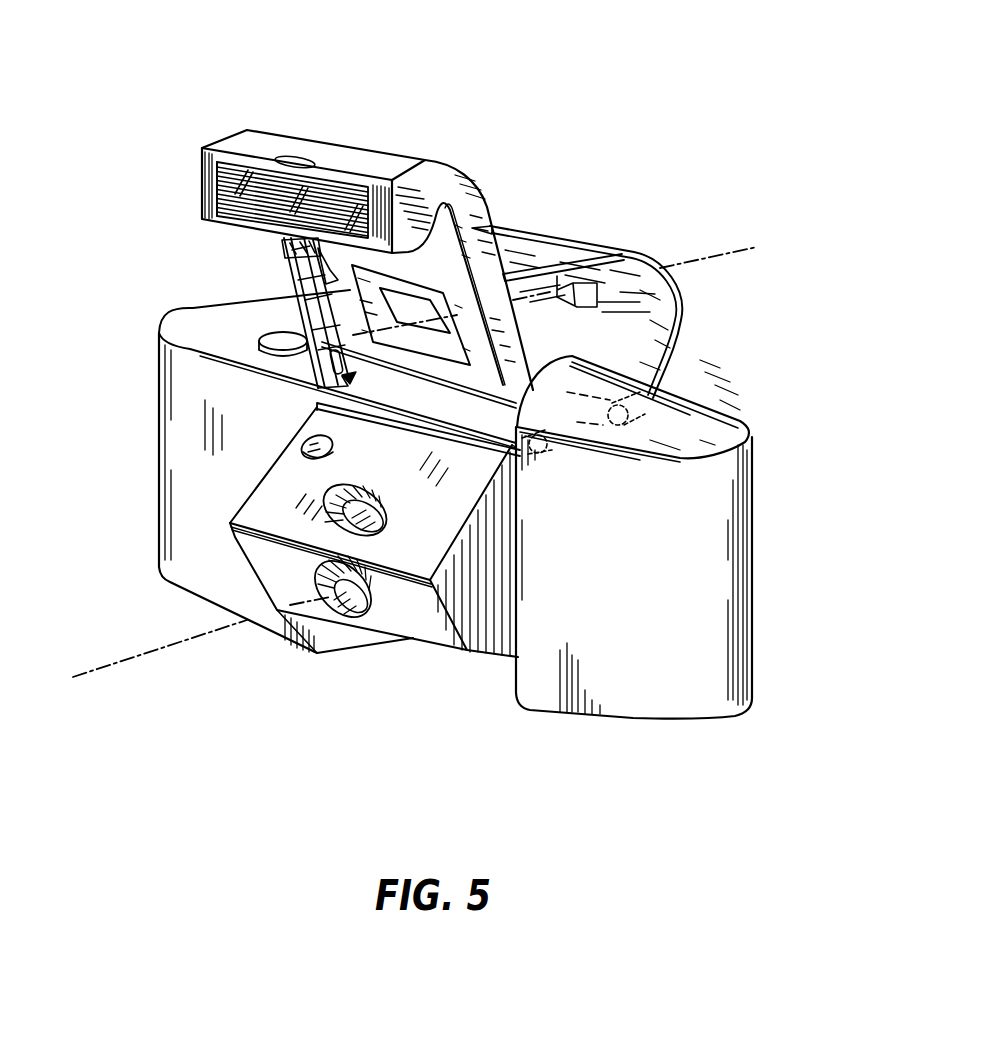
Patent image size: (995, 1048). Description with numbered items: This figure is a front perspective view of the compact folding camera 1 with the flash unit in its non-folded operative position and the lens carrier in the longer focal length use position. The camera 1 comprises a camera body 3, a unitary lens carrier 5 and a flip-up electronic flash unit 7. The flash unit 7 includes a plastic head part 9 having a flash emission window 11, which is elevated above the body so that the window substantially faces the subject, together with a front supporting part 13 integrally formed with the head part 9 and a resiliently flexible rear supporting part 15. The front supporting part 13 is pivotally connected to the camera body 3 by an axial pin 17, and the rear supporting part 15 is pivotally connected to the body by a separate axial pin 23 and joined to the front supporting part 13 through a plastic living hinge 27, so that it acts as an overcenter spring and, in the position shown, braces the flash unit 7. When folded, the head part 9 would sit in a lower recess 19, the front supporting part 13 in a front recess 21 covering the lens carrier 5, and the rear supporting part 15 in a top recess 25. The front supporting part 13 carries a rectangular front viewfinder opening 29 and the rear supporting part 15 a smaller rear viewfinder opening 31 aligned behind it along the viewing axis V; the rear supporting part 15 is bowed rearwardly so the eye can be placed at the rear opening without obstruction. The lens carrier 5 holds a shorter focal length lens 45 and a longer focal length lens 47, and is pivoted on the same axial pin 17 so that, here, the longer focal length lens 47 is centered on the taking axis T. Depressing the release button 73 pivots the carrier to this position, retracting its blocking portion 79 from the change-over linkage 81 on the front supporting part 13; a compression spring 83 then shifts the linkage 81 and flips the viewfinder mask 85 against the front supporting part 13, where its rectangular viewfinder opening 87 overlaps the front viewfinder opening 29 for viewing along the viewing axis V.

The compact folding 35mm camera 1 is at (757, 717).
The camera body 3 is at (757, 647).
The lens carrier 5 is at (413, 637).
The flip-up electronic flash unit 7 is at (390, 143).
The head part 9 is at (333, 160).
The flash emission window 11 is at (203, 198).
The front supporting part 13 is at (445, 243).
The rear supporting part 15 is at (565, 248).
The axial pin 17 is at (548, 447).
The lower recess 19 is at (510, 680).
The front recess 21 is at (510, 620).
The axial pin 23 is at (632, 422).
The top recess 25 is at (553, 364).
The living hinge 27 is at (505, 277).
The front viewfinder opening 29 is at (412, 348).
The rear viewfinder opening 31 is at (570, 305).
The shorter focal length lens 45 is at (325, 516).
The longer focal length lens 47 is at (322, 586).
The release button 73 is at (287, 463).
The blocking portion 79 is at (317, 405).
The change-over linkage 81 is at (305, 300).
The compression spring 83 is at (286, 256).
The viewfinder mask 85 is at (445, 300).
The rectangular viewfinder opening 87 is at (338, 266).
The viewing axis V is at (720, 250).
The taking axis T is at (97, 667).